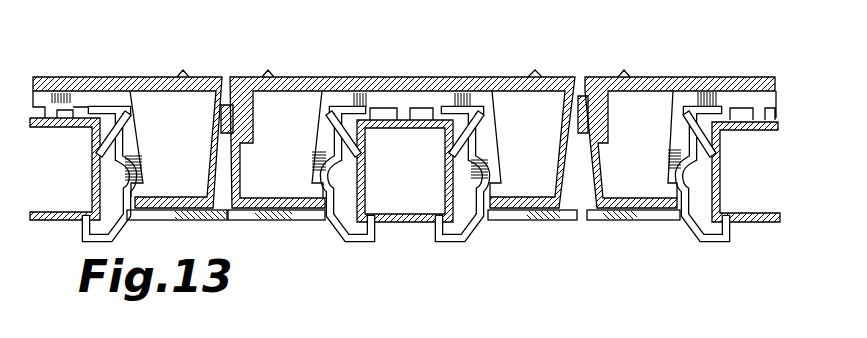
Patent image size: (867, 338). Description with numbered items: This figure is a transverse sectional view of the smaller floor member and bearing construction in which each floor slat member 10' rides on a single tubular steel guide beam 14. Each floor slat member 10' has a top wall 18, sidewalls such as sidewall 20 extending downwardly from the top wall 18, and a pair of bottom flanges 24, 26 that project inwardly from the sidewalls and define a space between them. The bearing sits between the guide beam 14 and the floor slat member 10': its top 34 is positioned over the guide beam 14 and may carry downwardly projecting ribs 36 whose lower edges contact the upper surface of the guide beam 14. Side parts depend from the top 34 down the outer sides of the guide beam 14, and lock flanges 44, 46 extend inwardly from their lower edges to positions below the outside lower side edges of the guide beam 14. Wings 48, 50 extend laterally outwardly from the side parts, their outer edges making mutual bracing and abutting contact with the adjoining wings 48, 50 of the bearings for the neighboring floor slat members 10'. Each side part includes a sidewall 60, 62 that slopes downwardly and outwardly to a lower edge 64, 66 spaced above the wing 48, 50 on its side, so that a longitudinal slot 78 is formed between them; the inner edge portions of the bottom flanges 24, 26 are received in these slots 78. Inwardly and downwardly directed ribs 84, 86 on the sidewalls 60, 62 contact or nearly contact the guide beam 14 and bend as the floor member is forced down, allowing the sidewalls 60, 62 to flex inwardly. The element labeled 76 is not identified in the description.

The floor slat member 10' is at (455, 37).
The guide beam 14 is at (53, 223).
The top wall 18 is at (150, 78).
The sidewall 20 is at (238, 170).
The bottom flange 24 is at (292, 221).
The bottom flange 26 is at (538, 221).
The top 34 is at (68, 97).
The rib 36 is at (757, 148).
The lock flange 44 is at (362, 248).
The lock flange 46 is at (125, 233).
The wing 48 is at (258, 221).
The wing 50 is at (173, 218).
The sidewall 60 is at (320, 118).
The sidewall 62 is at (143, 137).
The lower edge 64 is at (305, 190).
The lower edge 66 is at (140, 188).
The flange 76 is at (320, 197).
The longitudinal slot 78 is at (137, 193).
The rib 84 is at (348, 130).
The rib 86 is at (110, 147).